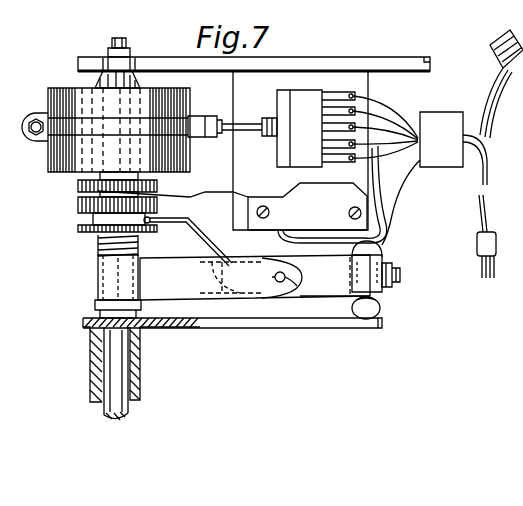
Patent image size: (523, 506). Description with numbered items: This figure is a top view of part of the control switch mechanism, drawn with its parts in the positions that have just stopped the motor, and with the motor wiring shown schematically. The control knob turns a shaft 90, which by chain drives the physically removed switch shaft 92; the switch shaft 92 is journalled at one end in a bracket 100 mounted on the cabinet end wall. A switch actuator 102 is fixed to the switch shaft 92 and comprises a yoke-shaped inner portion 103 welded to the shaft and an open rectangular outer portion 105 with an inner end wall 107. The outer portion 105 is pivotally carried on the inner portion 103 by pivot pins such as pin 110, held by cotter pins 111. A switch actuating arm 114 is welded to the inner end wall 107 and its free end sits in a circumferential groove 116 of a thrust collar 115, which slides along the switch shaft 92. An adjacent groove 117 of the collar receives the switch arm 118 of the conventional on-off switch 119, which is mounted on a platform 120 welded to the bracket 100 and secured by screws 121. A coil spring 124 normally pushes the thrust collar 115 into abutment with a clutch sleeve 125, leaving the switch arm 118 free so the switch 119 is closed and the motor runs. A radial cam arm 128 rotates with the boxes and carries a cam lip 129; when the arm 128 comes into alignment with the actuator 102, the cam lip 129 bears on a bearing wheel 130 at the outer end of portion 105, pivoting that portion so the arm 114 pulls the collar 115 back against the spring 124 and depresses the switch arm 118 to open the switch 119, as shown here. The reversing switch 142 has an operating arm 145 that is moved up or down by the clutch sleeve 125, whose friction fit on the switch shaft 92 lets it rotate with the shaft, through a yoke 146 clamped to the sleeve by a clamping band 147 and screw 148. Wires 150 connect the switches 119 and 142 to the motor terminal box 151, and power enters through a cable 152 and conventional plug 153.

The shaft 90 is at (493, 42).
The switch shaft 92 is at (104, 52).
The bracket 100 is at (356, 57).
The switch actuator 102 is at (404, 263).
The inner portion 103 is at (188, 318).
The outer portion 105 is at (333, 306).
The inner end wall 107 is at (186, 284).
The pivot pin 110 is at (289, 253).
The cotter pin 111 is at (297, 286).
The switch actuating arm 114 is at (200, 240).
The thrust collar 115 is at (78, 210).
The circumferential groove 116 is at (80, 229).
The circumferential groove 117 is at (96, 191).
The switch arm 118 is at (224, 192).
The on-off switch 119 is at (331, 222).
The platform 120 is at (368, 98).
The screws 121 is at (257, 212).
The coil spring 124 is at (100, 247).
The clutch sleeve 125 is at (63, 88).
The radial arm 128 is at (286, 329).
The cam lip 129 is at (380, 318).
The bearing wheel 130 is at (372, 251).
The reversing switch 142 is at (300, 98).
The operating arm 145 is at (258, 124).
The yoke 146 is at (204, 113).
The clamping band 147 is at (113, 127).
The screw 148 is at (36, 139).
The wires 150 is at (416, 184).
The terminal box 151 is at (453, 117).
The cable 152 is at (485, 186).
The plug 153 is at (478, 243).